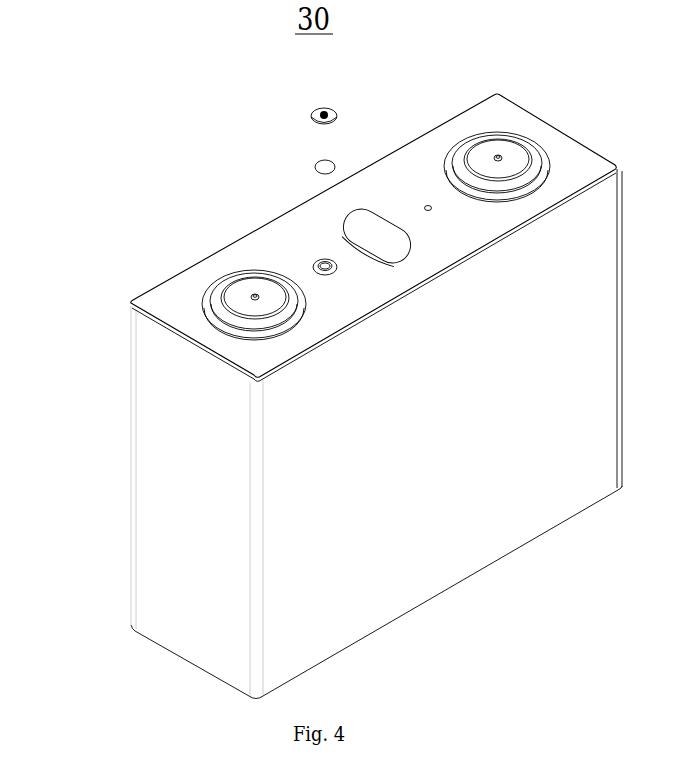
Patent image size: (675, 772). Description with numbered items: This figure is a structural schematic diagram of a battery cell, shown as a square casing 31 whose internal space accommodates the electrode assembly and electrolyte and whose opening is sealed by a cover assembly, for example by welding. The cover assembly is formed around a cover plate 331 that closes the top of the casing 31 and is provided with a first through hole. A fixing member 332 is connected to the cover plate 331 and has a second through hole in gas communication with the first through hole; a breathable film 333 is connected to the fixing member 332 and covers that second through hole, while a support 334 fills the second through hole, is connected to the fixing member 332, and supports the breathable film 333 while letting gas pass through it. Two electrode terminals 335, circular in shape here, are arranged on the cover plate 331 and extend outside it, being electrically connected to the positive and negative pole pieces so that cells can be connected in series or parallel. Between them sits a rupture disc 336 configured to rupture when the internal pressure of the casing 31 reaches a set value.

The casing 31 is at (152, 467).
The cover plate 331 is at (255, 252).
The fixing member 332 is at (318, 121).
The breathable film 333 is at (318, 168).
The support 334 is at (320, 113).
The electrode terminal 335 is at (240, 292).
The rupture disc 336 is at (382, 243).